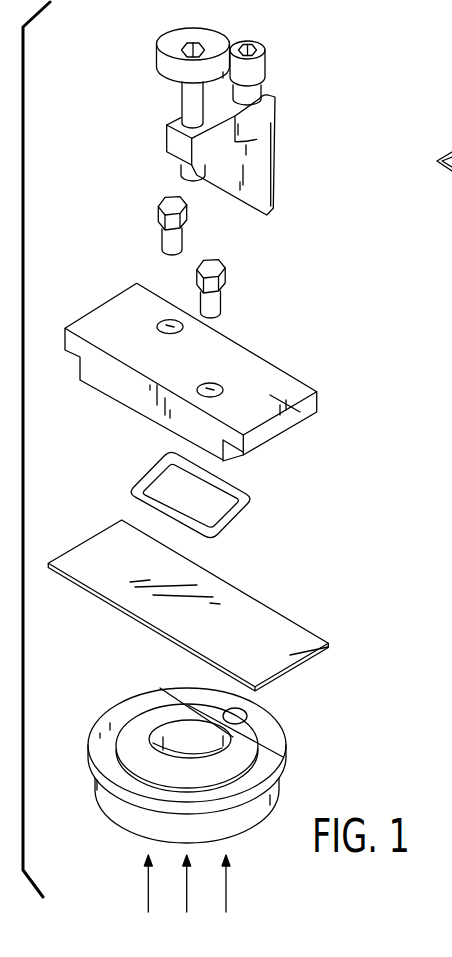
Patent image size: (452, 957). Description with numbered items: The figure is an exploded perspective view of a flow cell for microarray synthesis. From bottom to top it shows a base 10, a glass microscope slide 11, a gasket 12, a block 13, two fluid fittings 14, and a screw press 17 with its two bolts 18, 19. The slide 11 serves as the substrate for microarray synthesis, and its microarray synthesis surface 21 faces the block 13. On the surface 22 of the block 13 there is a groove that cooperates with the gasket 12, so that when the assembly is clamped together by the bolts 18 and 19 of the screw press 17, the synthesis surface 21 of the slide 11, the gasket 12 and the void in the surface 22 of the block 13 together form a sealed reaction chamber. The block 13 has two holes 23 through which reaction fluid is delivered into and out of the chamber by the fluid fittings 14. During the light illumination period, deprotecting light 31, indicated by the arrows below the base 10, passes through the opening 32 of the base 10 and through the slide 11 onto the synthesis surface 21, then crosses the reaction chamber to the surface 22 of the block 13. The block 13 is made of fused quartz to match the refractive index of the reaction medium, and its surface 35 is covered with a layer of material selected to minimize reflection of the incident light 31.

The base 10 is at (224, 765).
The glass microscope slide 11 is at (202, 605).
The gasket 12 is at (246, 528).
The block 13 is at (227, 383).
The fluid fittings 14 is at (222, 300).
The screw press 17 is at (276, 152).
The bolt 18 is at (265, 56).
The bolt 19 is at (215, 38).
The microarray synthesis surface 21 is at (290, 655).
The surface of the block 22 is at (224, 463).
The holes 23 is at (222, 384).
The deprotecting light 31 is at (226, 900).
The opening 32 is at (246, 721).
The surface of the block 35 is at (287, 396).